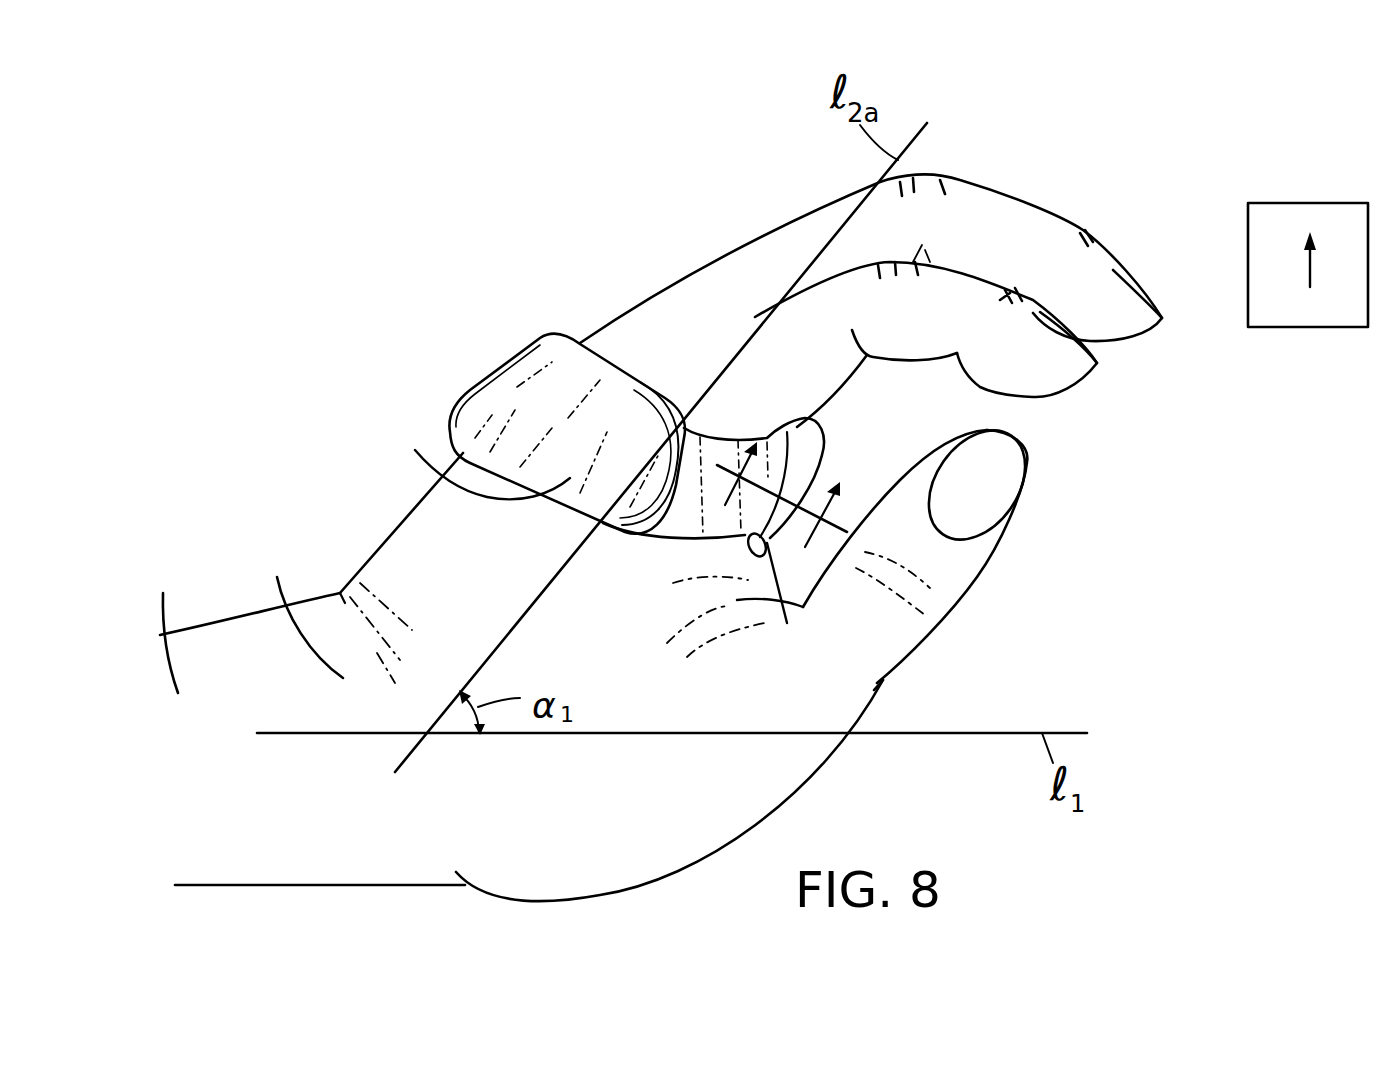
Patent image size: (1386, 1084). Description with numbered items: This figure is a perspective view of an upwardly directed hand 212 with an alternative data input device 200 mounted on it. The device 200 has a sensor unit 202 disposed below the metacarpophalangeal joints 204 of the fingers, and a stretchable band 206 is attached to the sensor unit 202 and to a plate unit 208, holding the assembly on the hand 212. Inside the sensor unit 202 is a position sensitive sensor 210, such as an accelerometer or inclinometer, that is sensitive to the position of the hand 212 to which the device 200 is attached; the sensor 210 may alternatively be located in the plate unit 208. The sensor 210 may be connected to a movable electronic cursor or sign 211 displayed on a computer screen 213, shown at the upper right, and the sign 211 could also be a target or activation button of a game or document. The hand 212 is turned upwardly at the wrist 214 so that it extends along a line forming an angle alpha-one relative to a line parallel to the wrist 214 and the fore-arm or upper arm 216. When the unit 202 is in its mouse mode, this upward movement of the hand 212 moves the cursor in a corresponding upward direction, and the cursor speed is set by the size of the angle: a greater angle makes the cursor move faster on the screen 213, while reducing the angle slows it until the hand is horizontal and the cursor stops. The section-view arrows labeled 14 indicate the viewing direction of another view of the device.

The data input device 200 is at (585, 256).
The sensor unit 202 is at (803, 447).
The metacarpophalangeal joints 204 is at (697, 383).
The stretchable band 206 is at (695, 535).
The plate unit 208 is at (467, 461).
The position sensitive sensor 210 is at (750, 553).
The movable electronic cursor or sign 211 is at (1310, 273).
The hand 212 is at (440, 552).
The computer screen 213 is at (1272, 203).
The wrist 214 is at (299, 612).
The fore-arm or upper arm 216 is at (240, 629).
The section view direction 14 is at (775, 500).